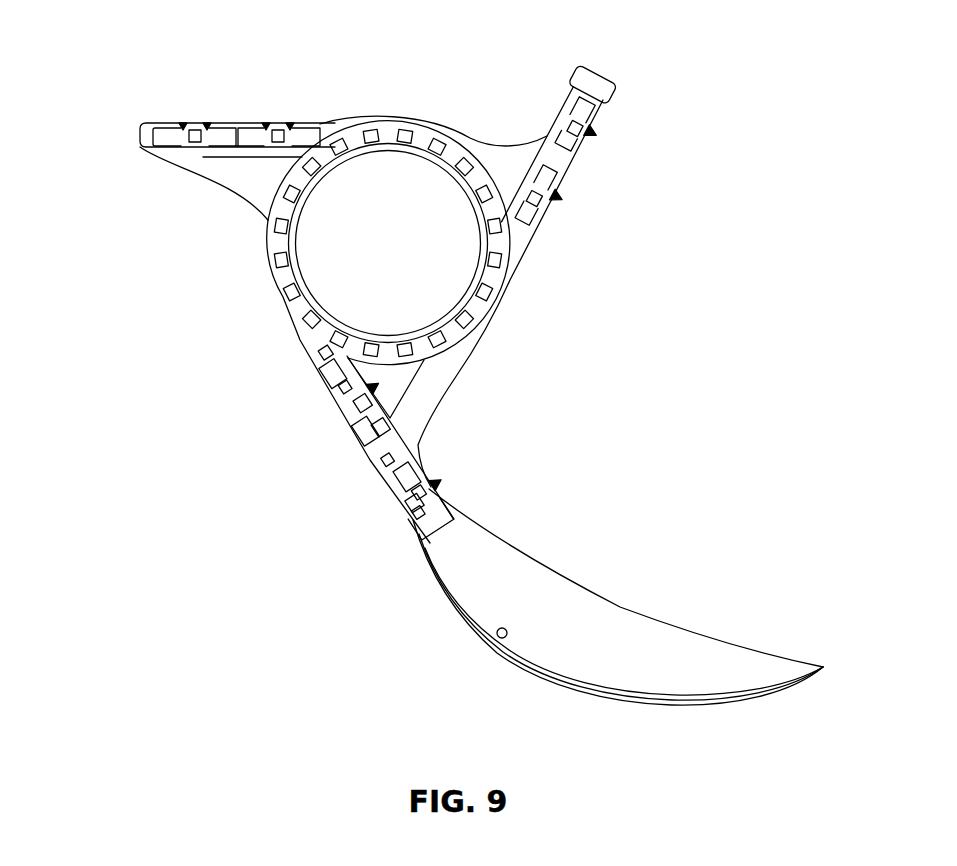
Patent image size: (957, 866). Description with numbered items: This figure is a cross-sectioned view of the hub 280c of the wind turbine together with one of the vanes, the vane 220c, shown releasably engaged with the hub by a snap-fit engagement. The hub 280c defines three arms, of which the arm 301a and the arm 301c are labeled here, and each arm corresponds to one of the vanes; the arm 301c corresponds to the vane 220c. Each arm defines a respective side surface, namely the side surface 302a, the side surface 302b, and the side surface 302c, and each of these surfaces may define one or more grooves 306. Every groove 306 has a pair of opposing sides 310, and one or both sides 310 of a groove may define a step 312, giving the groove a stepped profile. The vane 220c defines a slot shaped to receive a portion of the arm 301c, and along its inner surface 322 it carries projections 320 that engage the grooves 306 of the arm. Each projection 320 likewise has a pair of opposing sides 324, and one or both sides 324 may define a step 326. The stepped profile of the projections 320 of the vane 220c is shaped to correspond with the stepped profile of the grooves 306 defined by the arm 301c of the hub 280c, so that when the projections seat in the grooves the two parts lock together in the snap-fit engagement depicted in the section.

The vane 220c is at (768, 668).
The hub 280c is at (505, 310).
The arm 301a is at (334, 107).
The arm 301c is at (488, 520).
The side surface 302a is at (150, 124).
The side surface 302b is at (612, 97).
The side surface 302c is at (412, 534).
The groove 306 is at (332, 130).
The side 310 is at (203, 130).
The step 312 is at (206, 124).
The projection 320 is at (323, 363).
The inner surface 322 is at (494, 637).
The side 324 is at (310, 359).
The step 326 is at (350, 396).